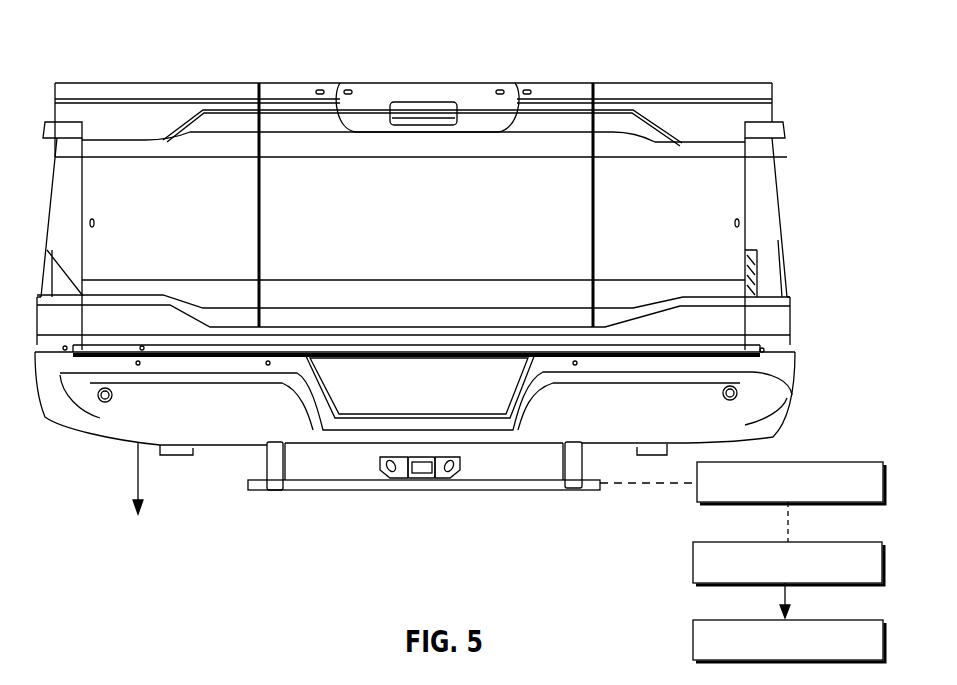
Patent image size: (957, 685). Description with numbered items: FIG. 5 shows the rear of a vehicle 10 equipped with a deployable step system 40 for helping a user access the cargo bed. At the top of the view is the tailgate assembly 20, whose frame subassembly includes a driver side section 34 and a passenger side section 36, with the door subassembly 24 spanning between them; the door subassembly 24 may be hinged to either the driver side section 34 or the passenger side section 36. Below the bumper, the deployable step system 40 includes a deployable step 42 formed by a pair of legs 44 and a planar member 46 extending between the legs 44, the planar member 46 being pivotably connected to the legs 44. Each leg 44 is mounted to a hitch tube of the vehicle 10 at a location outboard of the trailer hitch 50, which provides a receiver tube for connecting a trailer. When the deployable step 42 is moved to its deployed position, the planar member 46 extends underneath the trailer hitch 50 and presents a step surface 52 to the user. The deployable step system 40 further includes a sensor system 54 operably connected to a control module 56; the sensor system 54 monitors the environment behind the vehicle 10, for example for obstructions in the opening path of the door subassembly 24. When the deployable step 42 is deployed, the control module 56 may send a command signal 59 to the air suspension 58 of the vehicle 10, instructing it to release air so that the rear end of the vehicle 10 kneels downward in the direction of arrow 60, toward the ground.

The vehicle 10 is at (690, 32).
The tailgate assembly 20 is at (564, 97).
The door subassembly 24 is at (580, 143).
The driver side section 34 is at (155, 183).
The passenger side section 36 is at (722, 185).
The deployable step system 40 is at (267, 509).
The deployable step 42 is at (349, 496).
The legs 44 is at (275, 455).
The planar member 46 is at (443, 483).
The trailer hitch 50 is at (422, 478).
The step surface 52 is at (490, 477).
The sensor system 54 is at (833, 462).
The control module 56 is at (833, 542).
The air suspension 58 is at (833, 620).
The command signal 59 is at (782, 592).
The arrow 60 is at (135, 472).